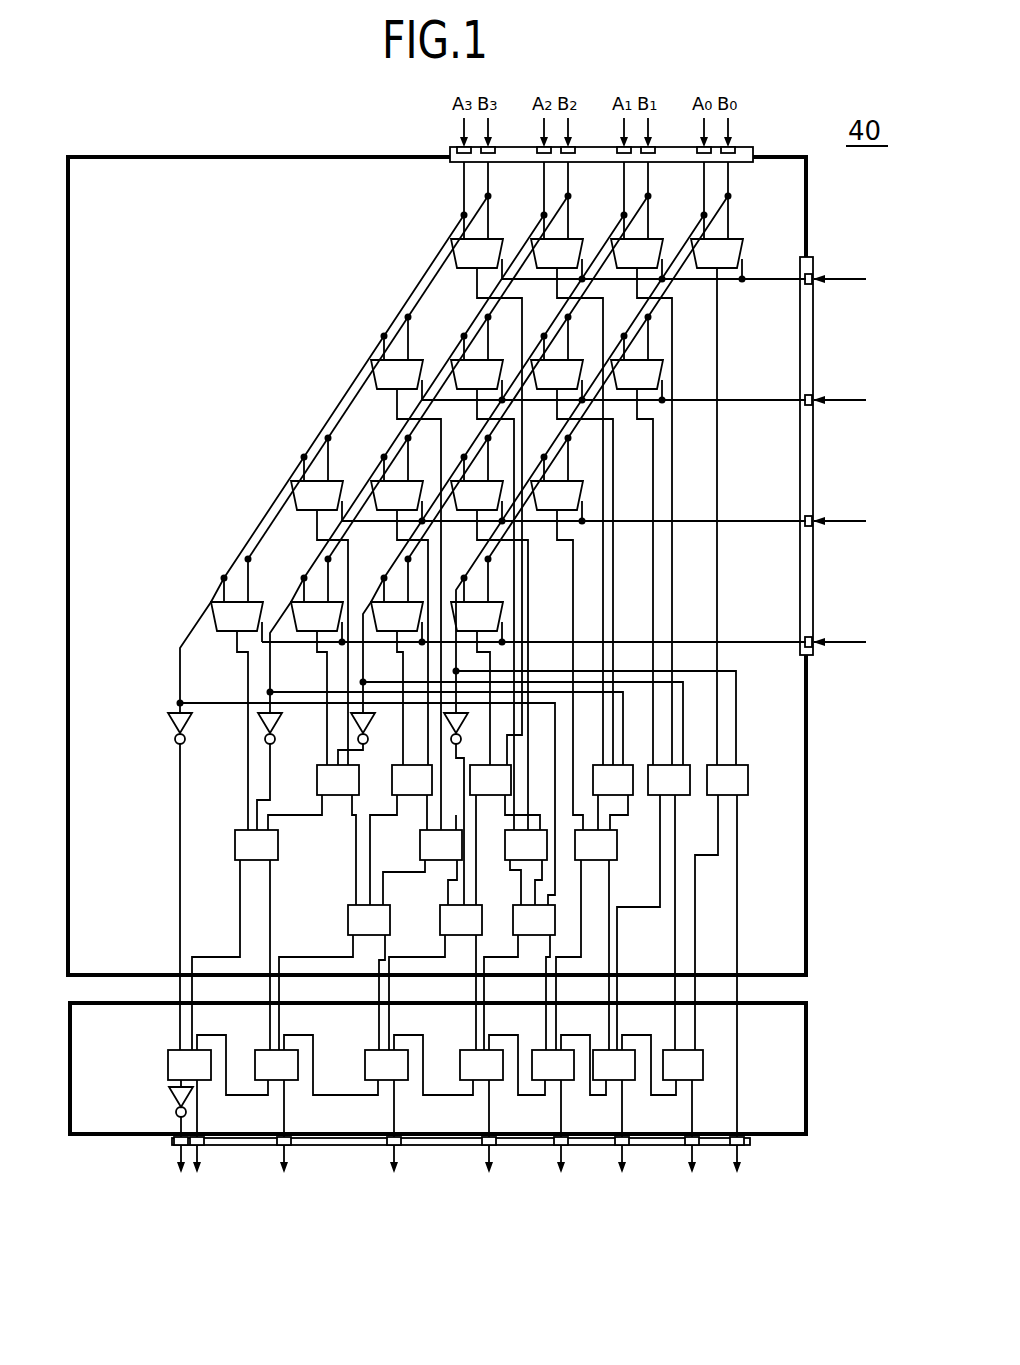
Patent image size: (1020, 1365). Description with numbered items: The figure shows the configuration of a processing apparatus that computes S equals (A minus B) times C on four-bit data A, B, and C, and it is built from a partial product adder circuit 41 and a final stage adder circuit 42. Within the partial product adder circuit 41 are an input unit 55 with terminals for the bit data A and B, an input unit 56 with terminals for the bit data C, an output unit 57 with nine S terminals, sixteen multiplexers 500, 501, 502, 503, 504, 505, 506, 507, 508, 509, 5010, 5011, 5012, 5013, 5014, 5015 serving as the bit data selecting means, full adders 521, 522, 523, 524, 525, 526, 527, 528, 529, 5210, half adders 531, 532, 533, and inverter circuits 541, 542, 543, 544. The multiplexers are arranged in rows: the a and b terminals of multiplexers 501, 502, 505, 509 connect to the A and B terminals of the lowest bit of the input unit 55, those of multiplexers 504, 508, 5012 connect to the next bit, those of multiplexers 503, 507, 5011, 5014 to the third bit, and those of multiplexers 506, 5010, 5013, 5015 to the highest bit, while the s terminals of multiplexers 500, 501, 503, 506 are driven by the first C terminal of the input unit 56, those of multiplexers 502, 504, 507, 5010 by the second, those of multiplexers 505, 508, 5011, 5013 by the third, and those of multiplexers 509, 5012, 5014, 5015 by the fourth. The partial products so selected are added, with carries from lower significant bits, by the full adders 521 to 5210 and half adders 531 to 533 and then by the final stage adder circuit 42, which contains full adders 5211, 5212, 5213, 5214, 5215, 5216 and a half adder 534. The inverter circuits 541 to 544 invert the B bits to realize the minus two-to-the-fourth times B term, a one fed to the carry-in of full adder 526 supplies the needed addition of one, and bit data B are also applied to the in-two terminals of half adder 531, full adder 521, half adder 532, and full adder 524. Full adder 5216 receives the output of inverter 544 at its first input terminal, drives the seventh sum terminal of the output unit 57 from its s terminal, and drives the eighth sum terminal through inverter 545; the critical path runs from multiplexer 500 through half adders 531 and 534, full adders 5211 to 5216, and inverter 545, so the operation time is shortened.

The partial product adder circuit 41 is at (807, 826).
The final stage adder circuit 42 is at (807, 1066).
The input unit 55 is at (753, 150).
The input unit 56 is at (813, 597).
The output unit 57 is at (878, 985).
The multiplexer 500 is at (740, 239).
The multiplexer 501 is at (660, 239).
The multiplexer 502 is at (662, 358).
The multiplexer 503 is at (580, 239).
The multiplexer 504 is at (640, 348).
The multiplexer 505 is at (582, 480).
The multiplexer 506 is at (500, 239).
The multiplexer 507 is at (455, 345).
The multiplexer 508 is at (542, 473).
The multiplexer 509 is at (503, 602).
The multiplexer 5010 is at (420, 358).
The multiplexer 5011 is at (375, 478).
The multiplexer 5012 is at (375, 600).
The multiplexer 5013 is at (340, 479).
The multiplexer 5014 is at (320, 600).
The multiplexer 5015 is at (262, 602).
The full adder 521 is at (687, 796).
The full adder 522 is at (612, 862).
The full adder 523 is at (528, 862).
The full adder 524 is at (555, 925).
The full adder 525 is at (420, 832).
The full adder 526 is at (440, 862).
The full adder 527 is at (440, 922).
The full adder 528 is at (322, 774).
The full adder 529 is at (348, 921).
The full adder 5210 is at (278, 846).
The full adder 5211 is at (634, 1080).
The full adder 5212 is at (573, 1080).
The full adder 5213 is at (501, 1080).
The full adder 5214 is at (408, 1080).
The full adder 5215 is at (298, 1080).
The full adder 5216 is at (213, 1080).
The half adder 531 is at (748, 770).
The half adder 532 is at (628, 815).
The half adder 533 is at (491, 765).
The half adder 534 is at (703, 1080).
The inverter circuit 541 is at (452, 712).
The inverter circuit 542 is at (356, 714).
The inverter circuit 543 is at (276, 742).
The inverter circuit 544 is at (186, 742).
The inverter 545 is at (172, 1108).